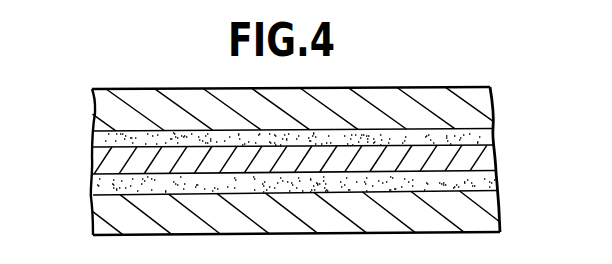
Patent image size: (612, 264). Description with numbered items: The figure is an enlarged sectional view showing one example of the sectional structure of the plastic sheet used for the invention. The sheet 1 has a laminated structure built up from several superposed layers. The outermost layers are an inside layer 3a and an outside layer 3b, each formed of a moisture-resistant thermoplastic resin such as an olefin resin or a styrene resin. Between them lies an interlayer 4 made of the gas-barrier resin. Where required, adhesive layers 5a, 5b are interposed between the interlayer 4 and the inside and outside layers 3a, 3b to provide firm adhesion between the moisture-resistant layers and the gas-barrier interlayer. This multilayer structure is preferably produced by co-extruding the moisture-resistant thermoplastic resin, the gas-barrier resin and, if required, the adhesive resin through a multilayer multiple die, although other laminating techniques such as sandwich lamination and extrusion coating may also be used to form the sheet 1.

The sheet 1 is at (453, 80).
The inside layer 3a is at (487, 214).
The outside layer 3b is at (480, 108).
The interlayer 4 is at (110, 158).
The adhesive layer 5a is at (480, 183).
The adhesive layer 5b is at (490, 137).